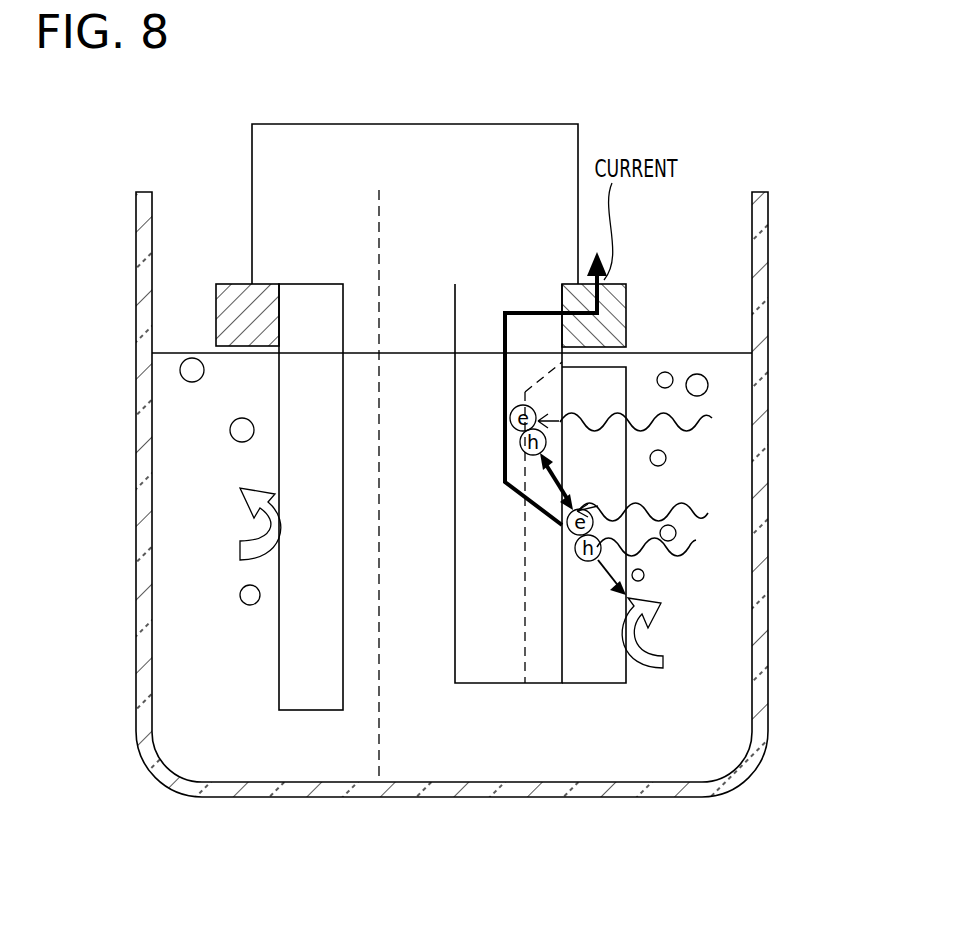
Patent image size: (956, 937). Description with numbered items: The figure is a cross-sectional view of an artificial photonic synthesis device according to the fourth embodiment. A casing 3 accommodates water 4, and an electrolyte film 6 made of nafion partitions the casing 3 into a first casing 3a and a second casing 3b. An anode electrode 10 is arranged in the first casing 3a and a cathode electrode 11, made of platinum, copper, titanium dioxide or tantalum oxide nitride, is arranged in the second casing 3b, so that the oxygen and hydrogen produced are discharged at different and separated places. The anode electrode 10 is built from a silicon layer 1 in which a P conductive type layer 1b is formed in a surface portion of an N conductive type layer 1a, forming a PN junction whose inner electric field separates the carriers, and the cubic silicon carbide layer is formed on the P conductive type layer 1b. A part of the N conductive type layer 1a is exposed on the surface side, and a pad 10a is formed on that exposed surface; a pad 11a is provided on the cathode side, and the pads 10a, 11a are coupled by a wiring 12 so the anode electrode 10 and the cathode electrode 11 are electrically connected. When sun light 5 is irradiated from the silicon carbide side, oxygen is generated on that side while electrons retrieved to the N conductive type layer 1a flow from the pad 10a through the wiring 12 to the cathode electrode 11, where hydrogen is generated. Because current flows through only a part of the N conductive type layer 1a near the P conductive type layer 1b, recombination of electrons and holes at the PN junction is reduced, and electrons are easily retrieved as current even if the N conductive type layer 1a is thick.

The silicon layer 1 is at (458, 854).
The N conductive type layer 1a is at (500, 683).
The P conductive type layer 1b is at (540, 683).
The casing 3 is at (768, 237).
The first casing 3a is at (710, 745).
The second casing 3b is at (193, 733).
The water 4 is at (715, 308).
The sun light 5 is at (715, 405).
The electrolyte film 6 is at (377, 733).
The anode electrode 10 is at (607, 688).
The pad 10a is at (627, 303).
The cathode electrode 11 is at (306, 711).
The pad 11a is at (214, 307).
The wiring 12 is at (490, 124).